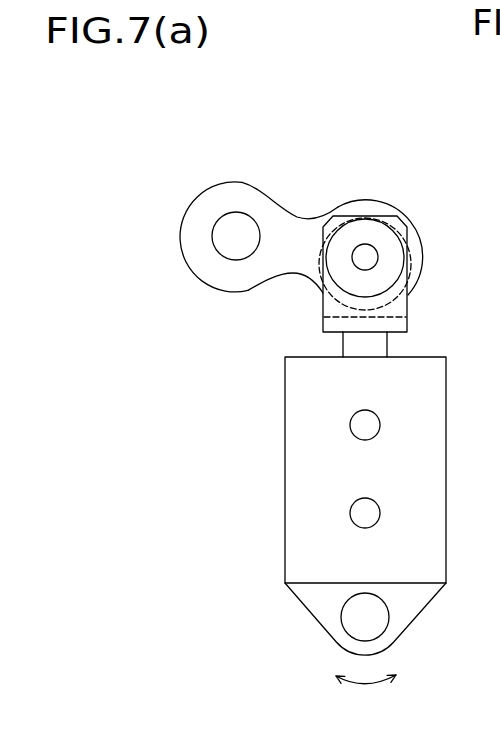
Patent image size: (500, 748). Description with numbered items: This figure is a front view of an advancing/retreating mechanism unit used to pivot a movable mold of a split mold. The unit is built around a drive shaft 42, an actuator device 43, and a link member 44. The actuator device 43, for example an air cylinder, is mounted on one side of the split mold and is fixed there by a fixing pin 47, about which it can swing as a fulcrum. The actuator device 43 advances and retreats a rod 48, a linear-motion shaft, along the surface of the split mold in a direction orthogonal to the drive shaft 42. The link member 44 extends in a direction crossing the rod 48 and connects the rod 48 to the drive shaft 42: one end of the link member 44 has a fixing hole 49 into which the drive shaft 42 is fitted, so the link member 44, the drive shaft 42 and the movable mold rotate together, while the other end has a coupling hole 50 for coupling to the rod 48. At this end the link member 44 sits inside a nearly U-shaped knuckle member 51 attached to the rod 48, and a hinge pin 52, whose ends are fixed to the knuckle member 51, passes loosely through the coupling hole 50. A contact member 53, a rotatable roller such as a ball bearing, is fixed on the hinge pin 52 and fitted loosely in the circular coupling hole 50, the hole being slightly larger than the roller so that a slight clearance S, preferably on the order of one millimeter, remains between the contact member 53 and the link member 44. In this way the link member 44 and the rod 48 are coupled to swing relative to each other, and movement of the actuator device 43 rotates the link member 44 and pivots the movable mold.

The drive shaft 42 is at (203, 212).
The actuator device 43 is at (305, 480).
The link member 44 is at (298, 223).
The fixing pin 47 is at (352, 608).
The rod 48 is at (382, 343).
The fixing hole 49 is at (231, 215).
The coupling hole 50 is at (331, 275).
The knuckle member 51 is at (402, 307).
The hinge pin 52 is at (370, 257).
The contact member 53 is at (368, 254).
The clearance S is at (390, 227).